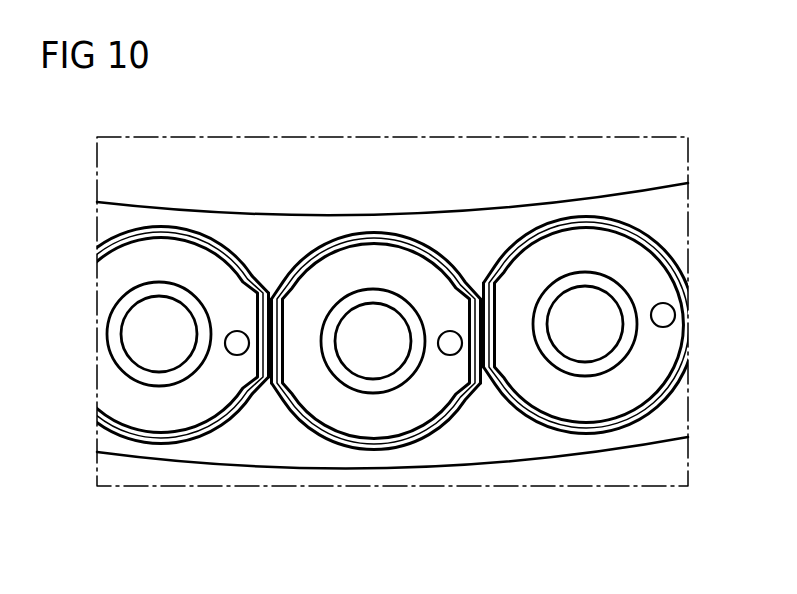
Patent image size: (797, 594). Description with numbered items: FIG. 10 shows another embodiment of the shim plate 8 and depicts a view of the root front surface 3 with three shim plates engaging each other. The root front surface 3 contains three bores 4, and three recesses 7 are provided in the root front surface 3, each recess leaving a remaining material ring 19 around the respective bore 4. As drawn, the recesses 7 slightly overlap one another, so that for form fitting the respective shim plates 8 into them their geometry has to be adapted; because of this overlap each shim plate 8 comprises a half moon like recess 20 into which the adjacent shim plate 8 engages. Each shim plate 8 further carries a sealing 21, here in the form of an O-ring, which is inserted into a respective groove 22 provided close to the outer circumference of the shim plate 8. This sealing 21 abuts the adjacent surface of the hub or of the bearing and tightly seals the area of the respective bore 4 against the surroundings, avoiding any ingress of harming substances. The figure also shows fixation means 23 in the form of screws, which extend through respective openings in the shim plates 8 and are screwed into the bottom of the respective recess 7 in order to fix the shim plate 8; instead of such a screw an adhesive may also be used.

The root front surface 3 is at (306, 228).
The bore 4 is at (158, 354).
The recess 7 is at (221, 239).
The shim plate 8 is at (666, 238).
The remaining material ring 19 is at (192, 366).
The half moon like recess 20 is at (278, 333).
The sealing 21 is at (145, 436).
The groove 22 is at (110, 430).
The fixation means 23 is at (237, 345).